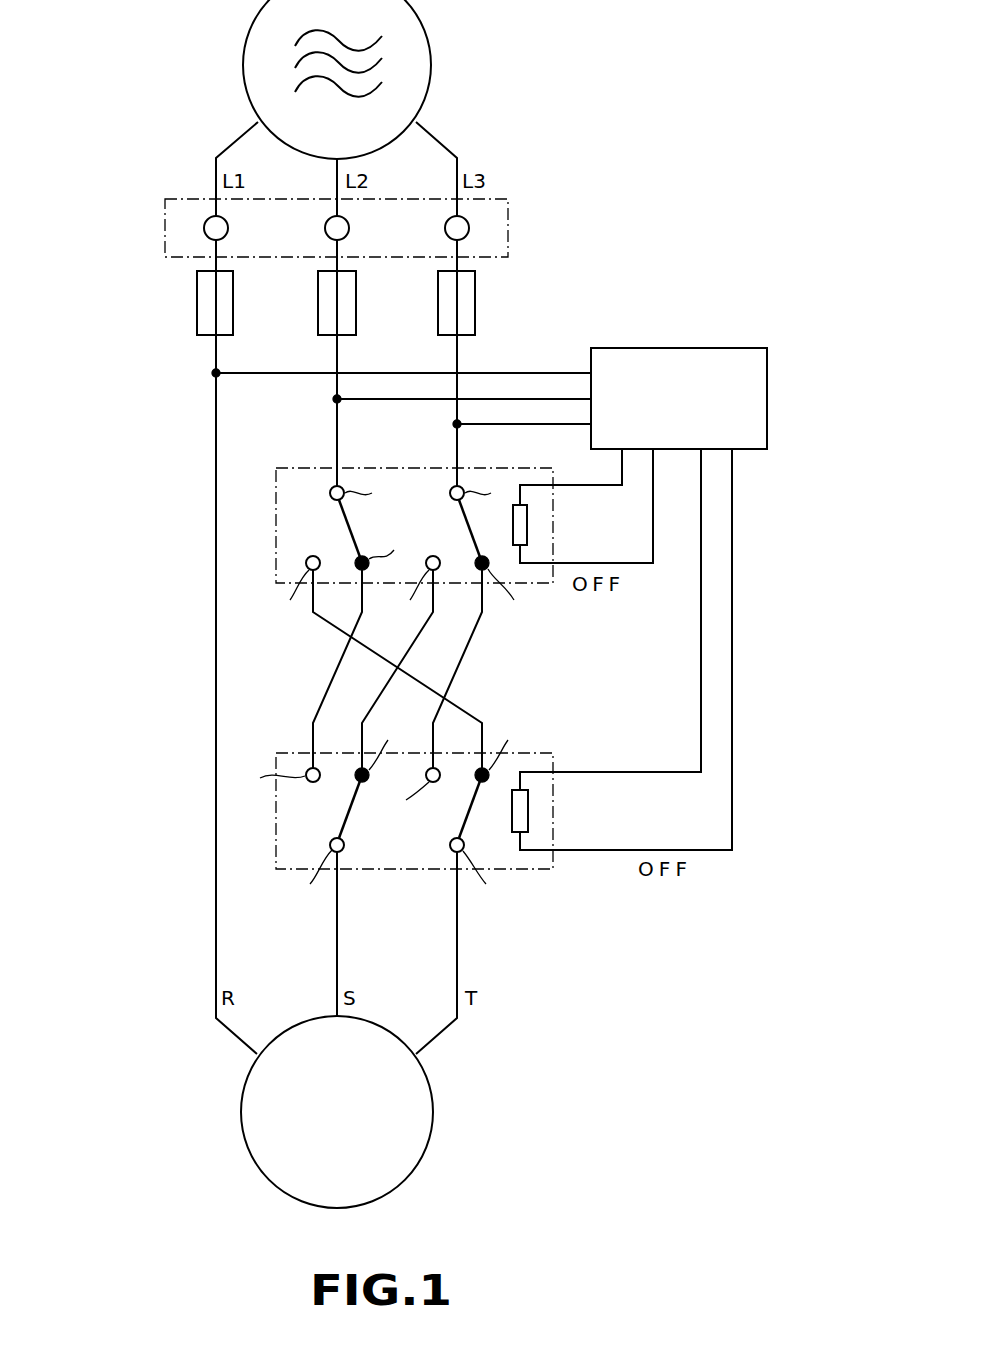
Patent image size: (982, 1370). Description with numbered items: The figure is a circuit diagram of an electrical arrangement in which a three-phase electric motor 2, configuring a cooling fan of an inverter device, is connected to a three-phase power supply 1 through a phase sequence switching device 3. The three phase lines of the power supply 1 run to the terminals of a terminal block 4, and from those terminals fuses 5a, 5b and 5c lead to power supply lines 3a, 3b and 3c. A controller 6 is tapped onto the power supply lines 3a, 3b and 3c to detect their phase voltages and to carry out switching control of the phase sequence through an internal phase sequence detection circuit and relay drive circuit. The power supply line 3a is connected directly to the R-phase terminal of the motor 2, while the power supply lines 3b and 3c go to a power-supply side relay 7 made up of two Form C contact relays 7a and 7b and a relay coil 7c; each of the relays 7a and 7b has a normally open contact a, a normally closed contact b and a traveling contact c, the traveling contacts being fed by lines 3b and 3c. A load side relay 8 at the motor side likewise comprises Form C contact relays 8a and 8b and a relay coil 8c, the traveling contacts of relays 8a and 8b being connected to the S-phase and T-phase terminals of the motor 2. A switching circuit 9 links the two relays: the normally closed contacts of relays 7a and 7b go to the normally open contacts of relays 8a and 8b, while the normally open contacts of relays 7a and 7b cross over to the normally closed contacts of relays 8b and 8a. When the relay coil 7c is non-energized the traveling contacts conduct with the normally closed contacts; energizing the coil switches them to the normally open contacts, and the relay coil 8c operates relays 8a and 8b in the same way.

The three-phase power supply 1 is at (432, 62).
The three-phase electric motor 2 is at (433, 1112).
The phase sequence switching device 3 is at (275, 588).
The power supply line 3a is at (214, 356).
The power supply line 3b is at (335, 356).
The power supply line 3c is at (455, 356).
The terminal block 4 is at (508, 228).
The fuse 5a is at (233, 300).
The fuse 5b is at (356, 300).
The fuse 5c is at (475, 300).
The controller 6 is at (690, 348).
The power-supply side relay 7 is at (377, 514).
The Form C contact relay 7a is at (322, 528).
The Form C contact relay 7b is at (442, 525).
The relay coil 7c is at (527, 522).
The load side relay 8 is at (384, 805).
The Form C contact relay 8a is at (307, 813).
The Form C contact relay 8b is at (438, 812).
The relay coil 8c is at (528, 810).
The switching circuit 9 is at (480, 670).